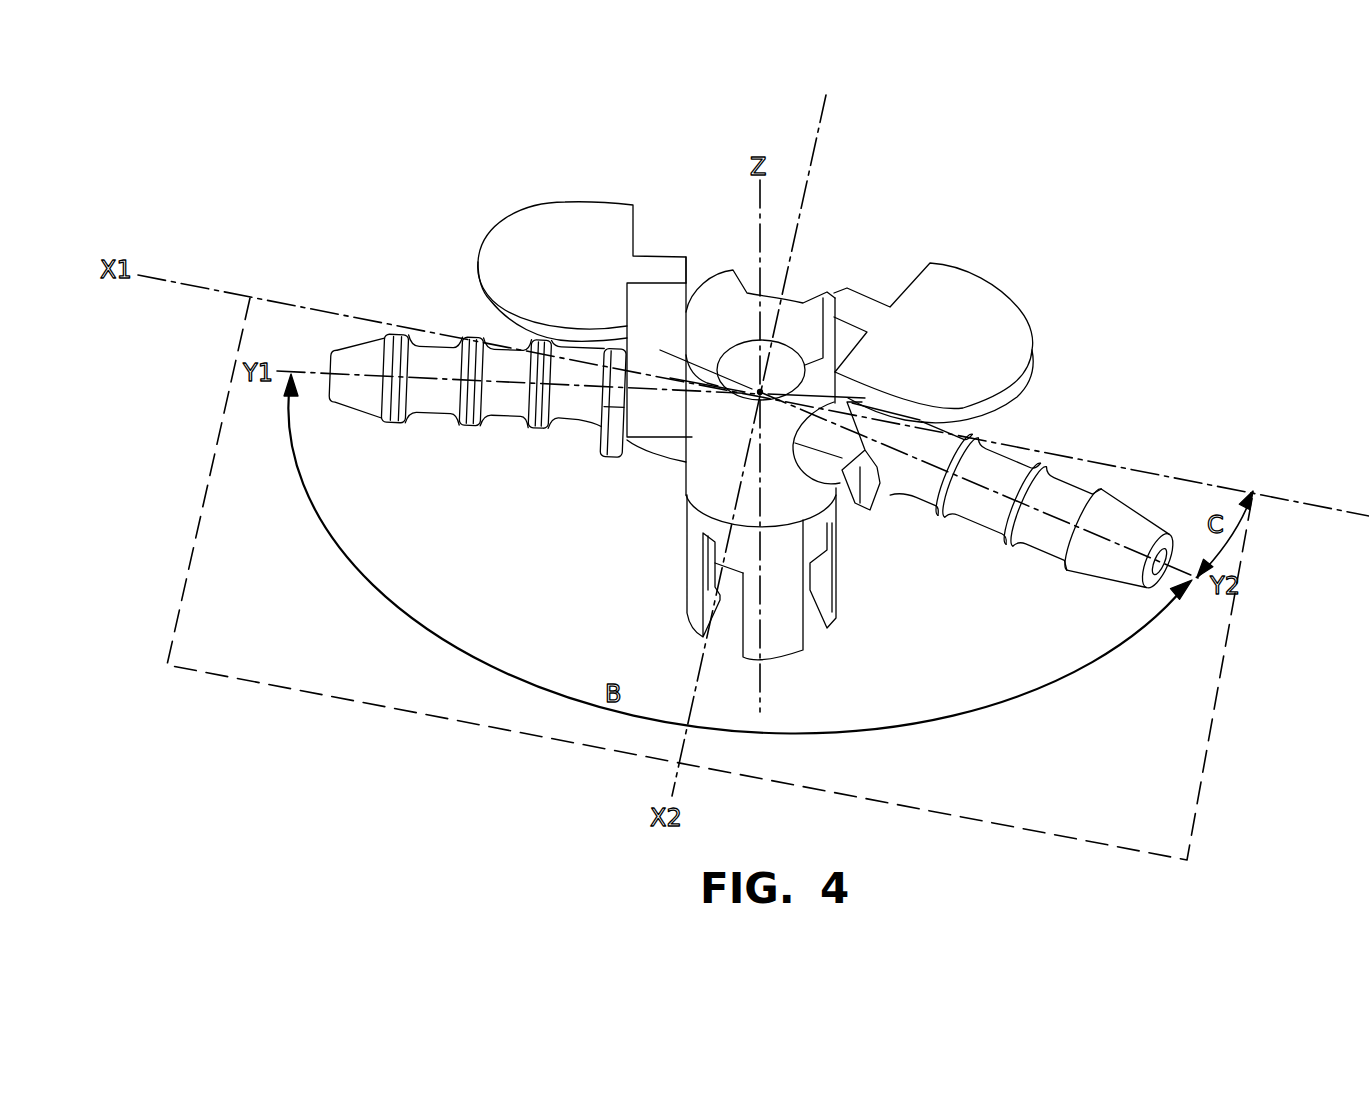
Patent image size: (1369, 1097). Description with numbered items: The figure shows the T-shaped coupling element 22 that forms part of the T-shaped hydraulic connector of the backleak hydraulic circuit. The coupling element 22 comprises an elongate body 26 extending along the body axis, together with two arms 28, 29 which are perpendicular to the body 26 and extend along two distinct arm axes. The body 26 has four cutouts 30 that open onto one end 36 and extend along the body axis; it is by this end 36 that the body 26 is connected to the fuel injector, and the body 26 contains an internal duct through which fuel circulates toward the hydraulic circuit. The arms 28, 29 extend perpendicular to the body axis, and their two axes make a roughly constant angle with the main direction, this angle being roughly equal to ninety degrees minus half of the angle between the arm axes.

The T-shaped coupling element 22 is at (610, 530).
The elongate body 26 is at (793, 597).
The arm 28 is at (1040, 535).
The arm 29 is at (428, 400).
The cutout 30 is at (738, 605).
The end 36 is at (797, 657).